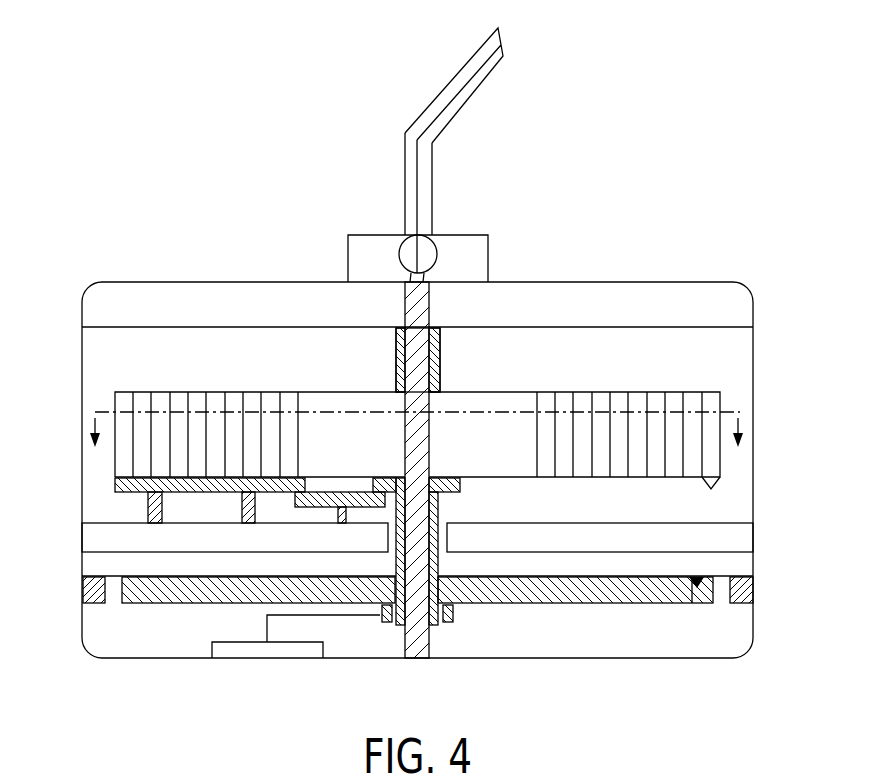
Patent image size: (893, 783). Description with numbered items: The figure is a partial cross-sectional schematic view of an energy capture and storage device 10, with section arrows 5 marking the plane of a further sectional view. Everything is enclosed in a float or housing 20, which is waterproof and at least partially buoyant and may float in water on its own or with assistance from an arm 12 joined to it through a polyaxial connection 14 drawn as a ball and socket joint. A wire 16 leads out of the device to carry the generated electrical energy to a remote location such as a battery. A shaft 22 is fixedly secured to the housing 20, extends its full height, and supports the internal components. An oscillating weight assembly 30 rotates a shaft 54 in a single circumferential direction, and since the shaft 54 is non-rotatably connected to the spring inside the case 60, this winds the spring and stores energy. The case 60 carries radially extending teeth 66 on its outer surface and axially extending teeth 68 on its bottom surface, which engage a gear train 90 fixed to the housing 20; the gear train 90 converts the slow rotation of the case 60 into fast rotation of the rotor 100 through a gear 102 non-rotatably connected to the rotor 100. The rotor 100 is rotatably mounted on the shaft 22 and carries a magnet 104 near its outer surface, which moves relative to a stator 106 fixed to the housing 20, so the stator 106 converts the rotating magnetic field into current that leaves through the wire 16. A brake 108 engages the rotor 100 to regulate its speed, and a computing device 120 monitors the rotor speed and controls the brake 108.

The device 10 is at (733, 206).
The arm 12 is at (403, 190).
The polyaxial connection 14 is at (483, 211).
The wire 16 is at (473, 80).
The housing 20 is at (753, 318).
The shaft 22 is at (420, 320).
The oscillating weight assembly 30 is at (417, 257).
The shaft 54 is at (430, 377).
The case 60 is at (722, 398).
The radially extending teeth 66 is at (130, 403).
The axially extending teeth 68 is at (113, 485).
The gear train 90 is at (78, 516).
The rotor 100 is at (182, 590).
The gear 102 is at (463, 484).
The magnet 104 is at (704, 598).
The stator 106 is at (85, 593).
The brake 108 is at (386, 622).
The computing device 120 is at (270, 648).
The section line 5 is at (417, 450).